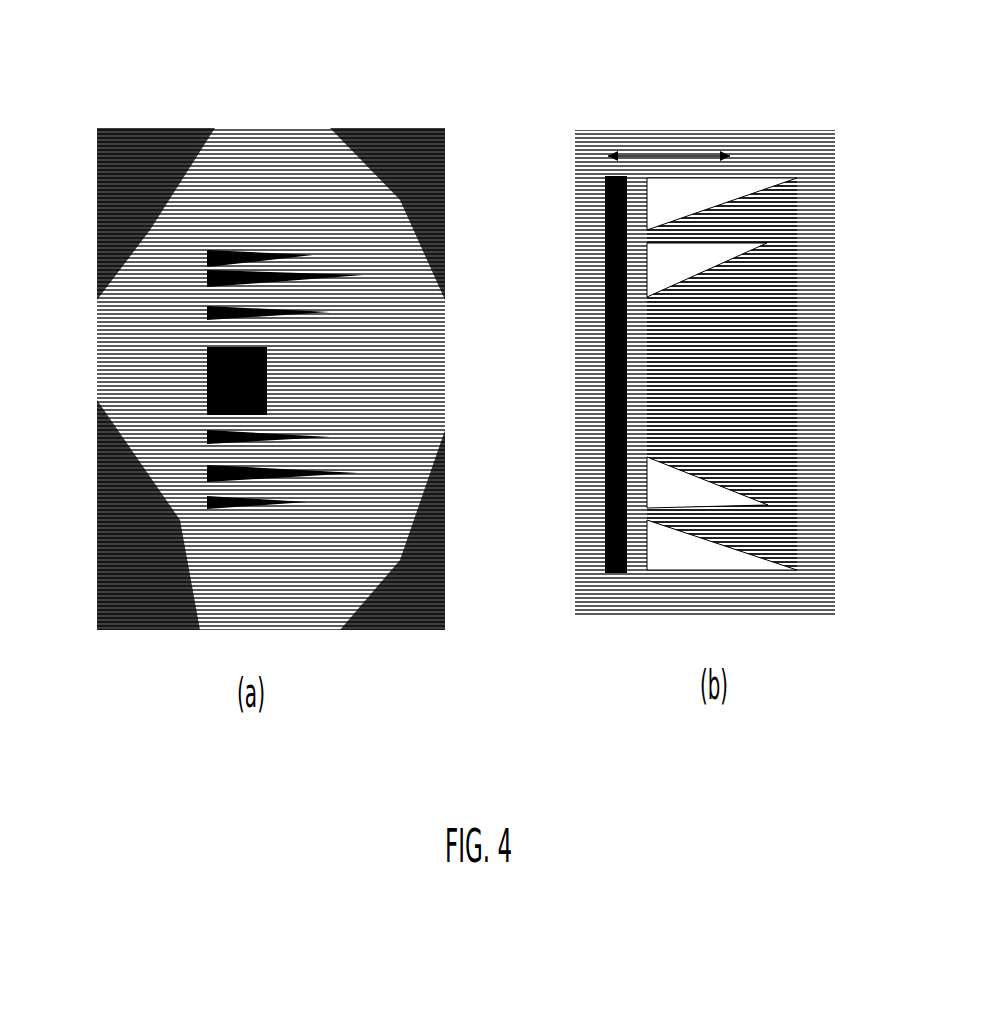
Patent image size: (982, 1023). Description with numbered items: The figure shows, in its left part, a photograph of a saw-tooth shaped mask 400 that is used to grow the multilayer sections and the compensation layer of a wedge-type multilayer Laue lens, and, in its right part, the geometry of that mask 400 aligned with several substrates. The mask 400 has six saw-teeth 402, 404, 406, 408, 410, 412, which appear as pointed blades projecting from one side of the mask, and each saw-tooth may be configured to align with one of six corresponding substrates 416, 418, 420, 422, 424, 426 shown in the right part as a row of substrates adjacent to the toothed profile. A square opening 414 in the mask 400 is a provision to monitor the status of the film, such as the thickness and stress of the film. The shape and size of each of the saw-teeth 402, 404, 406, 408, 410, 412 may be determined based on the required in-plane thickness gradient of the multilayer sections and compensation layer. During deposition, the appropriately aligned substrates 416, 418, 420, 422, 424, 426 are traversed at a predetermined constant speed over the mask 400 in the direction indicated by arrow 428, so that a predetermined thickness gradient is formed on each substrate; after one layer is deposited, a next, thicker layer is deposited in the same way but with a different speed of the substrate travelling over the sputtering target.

The mask 400 is at (274, 178).
The saw-tooth 402 is at (236, 248).
The saw-tooth 404 is at (167, 237).
The saw-tooth 406 is at (158, 290).
The saw-tooth 408 is at (168, 424).
The saw-tooth 410 is at (172, 486).
The saw-tooth 412 is at (165, 523).
The square opening 414 is at (200, 388).
The substrate 416 is at (603, 209).
The substrate 418 is at (603, 272).
The substrate 420 is at (603, 333).
The substrate 422 is at (603, 412).
The substrate 424 is at (603, 475).
The substrate 426 is at (607, 542).
The arrow 428 is at (672, 135).